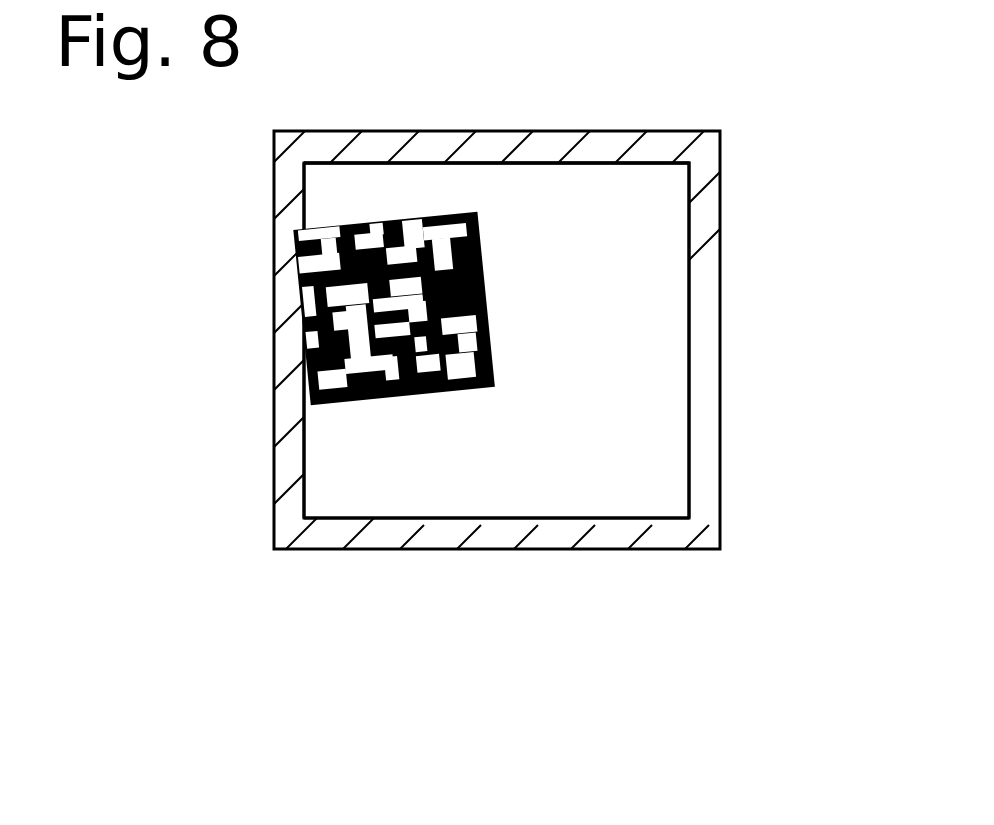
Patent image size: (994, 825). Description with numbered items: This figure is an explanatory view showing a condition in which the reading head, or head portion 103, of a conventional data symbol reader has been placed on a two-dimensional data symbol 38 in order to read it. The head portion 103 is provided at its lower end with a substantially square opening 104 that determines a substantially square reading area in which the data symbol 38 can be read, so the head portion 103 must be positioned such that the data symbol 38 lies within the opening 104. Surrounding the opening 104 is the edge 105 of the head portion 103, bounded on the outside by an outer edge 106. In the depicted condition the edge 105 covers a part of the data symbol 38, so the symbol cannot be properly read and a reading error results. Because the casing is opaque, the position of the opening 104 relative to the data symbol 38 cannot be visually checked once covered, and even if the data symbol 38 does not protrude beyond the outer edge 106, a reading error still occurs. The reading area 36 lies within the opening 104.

The card substrate 36 is at (637, 480).
The two-dimensional data symbol 38 is at (305, 362).
The head portion 103 is at (434, 573).
The opening 104 is at (627, 308).
The edge 105 is at (443, 131).
The outer edge 106 is at (273, 238).